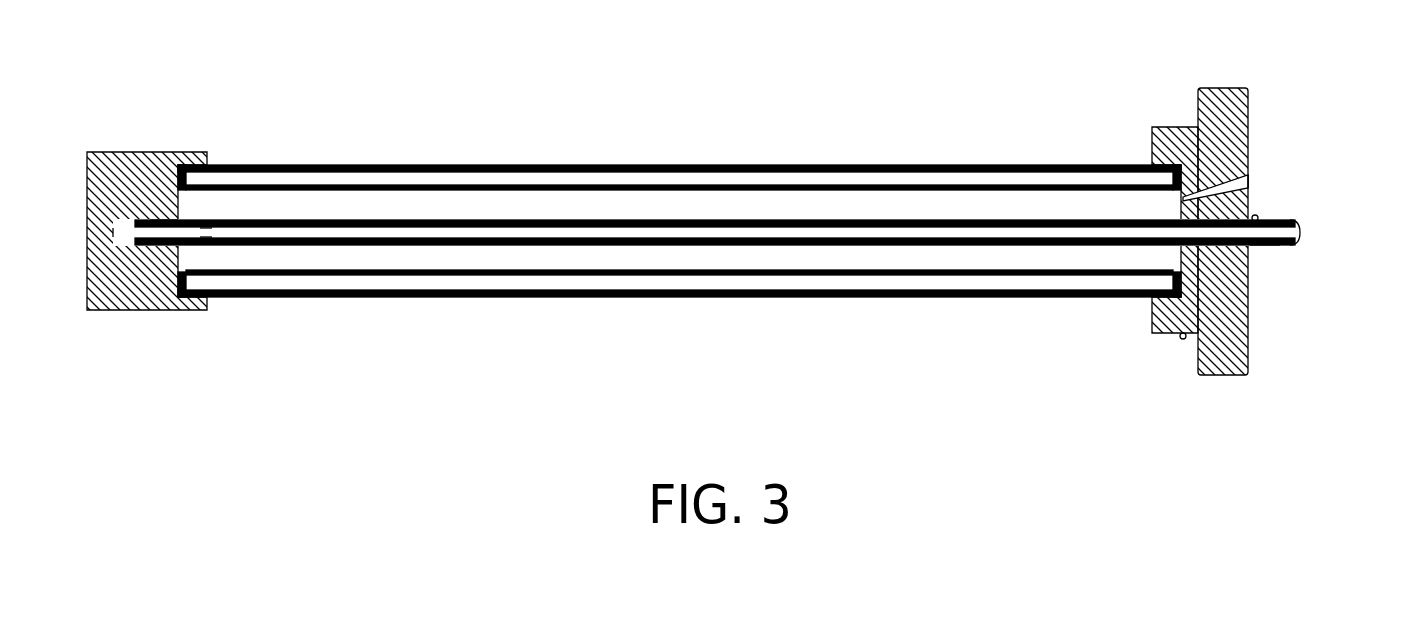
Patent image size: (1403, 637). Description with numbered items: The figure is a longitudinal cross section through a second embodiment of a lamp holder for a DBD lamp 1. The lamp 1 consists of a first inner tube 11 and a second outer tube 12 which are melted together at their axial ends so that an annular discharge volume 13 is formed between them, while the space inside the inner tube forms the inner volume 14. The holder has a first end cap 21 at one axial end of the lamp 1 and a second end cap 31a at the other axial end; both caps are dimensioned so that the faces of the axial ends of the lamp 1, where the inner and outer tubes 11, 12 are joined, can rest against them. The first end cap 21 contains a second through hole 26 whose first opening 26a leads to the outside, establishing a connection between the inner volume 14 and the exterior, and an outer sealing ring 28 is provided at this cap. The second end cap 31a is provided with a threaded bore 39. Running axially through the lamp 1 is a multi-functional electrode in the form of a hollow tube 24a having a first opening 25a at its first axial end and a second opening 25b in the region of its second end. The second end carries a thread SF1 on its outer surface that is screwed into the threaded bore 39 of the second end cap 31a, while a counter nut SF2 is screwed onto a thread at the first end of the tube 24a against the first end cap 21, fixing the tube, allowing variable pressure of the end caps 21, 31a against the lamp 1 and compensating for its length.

The DBD lamp 1 is at (443, 149).
The first inner tube 11 is at (392, 289).
The second outer tube 12 is at (445, 311).
The annular discharge volume 13 is at (543, 292).
The inner volume 14 is at (498, 267).
The first end cap 21 is at (1222, 100).
The hollow tube 24a is at (866, 221).
The first opening 25a is at (1317, 233).
The second opening 25b is at (211, 212).
The second through hole 26 is at (1243, 174).
The first opening 26a is at (1263, 180).
The outer sealing ring 28 is at (1178, 117).
The second end cap 31a is at (127, 158).
The threaded bore 39 is at (120, 238).
The thread SF1 is at (158, 208).
The counter nut SF2 is at (1275, 261).